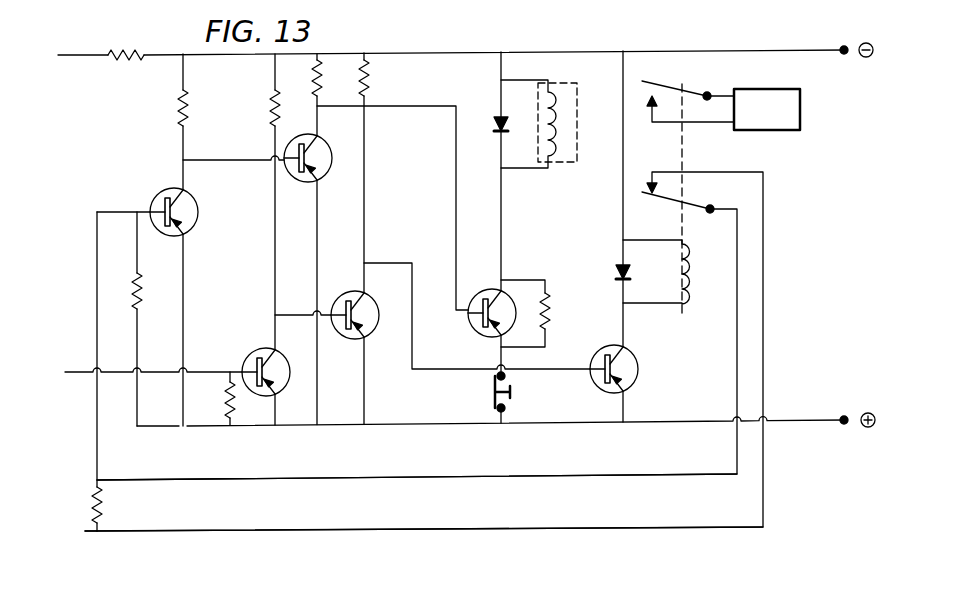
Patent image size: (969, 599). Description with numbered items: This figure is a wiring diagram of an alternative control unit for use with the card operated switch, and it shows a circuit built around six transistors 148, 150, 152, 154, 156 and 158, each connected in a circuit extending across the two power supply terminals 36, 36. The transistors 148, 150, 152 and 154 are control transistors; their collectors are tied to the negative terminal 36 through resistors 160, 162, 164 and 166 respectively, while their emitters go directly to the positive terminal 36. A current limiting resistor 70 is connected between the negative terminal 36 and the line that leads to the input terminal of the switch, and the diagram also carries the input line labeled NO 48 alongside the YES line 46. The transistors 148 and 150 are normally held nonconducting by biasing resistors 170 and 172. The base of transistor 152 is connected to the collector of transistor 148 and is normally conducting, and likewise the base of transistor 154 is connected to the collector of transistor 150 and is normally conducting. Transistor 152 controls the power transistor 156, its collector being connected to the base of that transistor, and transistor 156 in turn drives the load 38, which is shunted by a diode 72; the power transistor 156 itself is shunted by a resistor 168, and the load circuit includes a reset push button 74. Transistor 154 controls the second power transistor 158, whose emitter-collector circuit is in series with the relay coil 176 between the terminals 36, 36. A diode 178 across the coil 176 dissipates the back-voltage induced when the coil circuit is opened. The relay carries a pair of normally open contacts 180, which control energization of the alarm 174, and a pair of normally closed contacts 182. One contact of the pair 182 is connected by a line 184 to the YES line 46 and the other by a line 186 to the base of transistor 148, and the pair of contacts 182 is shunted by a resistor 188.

The current limiting resistor 70 is at (127, 64).
The resistor 160 is at (178, 107).
The resistor 162 is at (268, 102).
The resistor 164 is at (323, 78).
The resistor 166 is at (372, 80).
The biasing resistor 170 is at (143, 285).
The biasing resistor 172 is at (236, 410).
The resistor 168 is at (551, 305).
The resistor 188 is at (108, 511).
The control transistor 148 is at (200, 206).
The control transistor 150 is at (282, 358).
The control transistor 152 is at (325, 148).
The control transistor 154 is at (374, 306).
The power transistor 156 is at (471, 328).
The power transistor 158 is at (641, 358).
The diode 72 is at (508, 119).
The diode 178 is at (619, 265).
The load 38 is at (578, 83).
The relay coil 176 is at (694, 262).
The normally open contacts 180 is at (684, 82).
The normally closed contacts 182 is at (695, 201).
The alarm 174 is at (806, 119).
The reset push button 74 is at (516, 392).
The power supply terminal 36 is at (845, 45).
The NO input terminal 48 is at (70, 377).
The YES line 46 is at (85, 538).
The line 186 is at (417, 492).
The line 184 is at (430, 548).